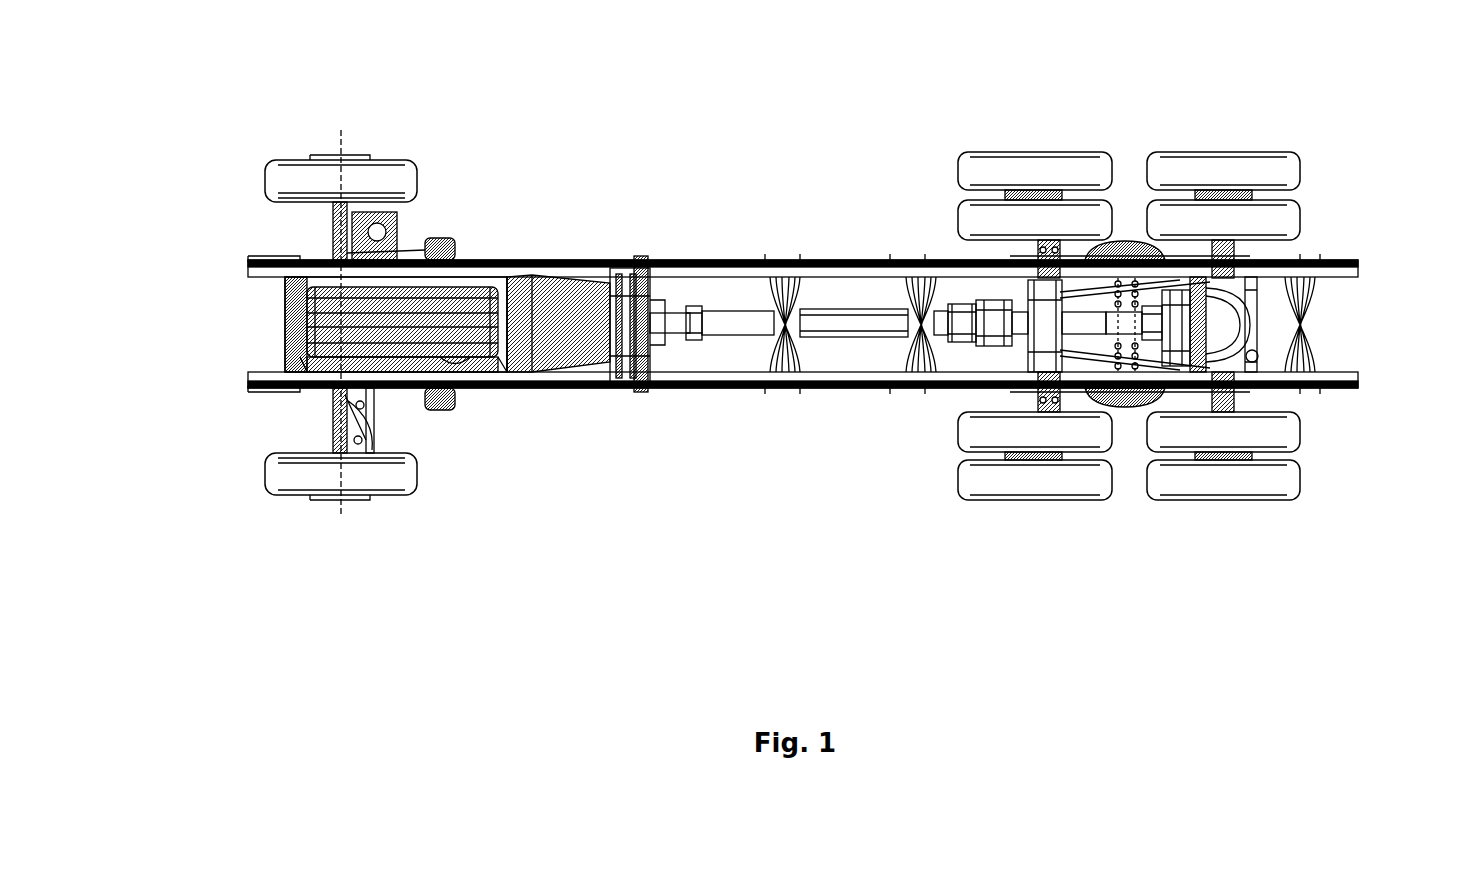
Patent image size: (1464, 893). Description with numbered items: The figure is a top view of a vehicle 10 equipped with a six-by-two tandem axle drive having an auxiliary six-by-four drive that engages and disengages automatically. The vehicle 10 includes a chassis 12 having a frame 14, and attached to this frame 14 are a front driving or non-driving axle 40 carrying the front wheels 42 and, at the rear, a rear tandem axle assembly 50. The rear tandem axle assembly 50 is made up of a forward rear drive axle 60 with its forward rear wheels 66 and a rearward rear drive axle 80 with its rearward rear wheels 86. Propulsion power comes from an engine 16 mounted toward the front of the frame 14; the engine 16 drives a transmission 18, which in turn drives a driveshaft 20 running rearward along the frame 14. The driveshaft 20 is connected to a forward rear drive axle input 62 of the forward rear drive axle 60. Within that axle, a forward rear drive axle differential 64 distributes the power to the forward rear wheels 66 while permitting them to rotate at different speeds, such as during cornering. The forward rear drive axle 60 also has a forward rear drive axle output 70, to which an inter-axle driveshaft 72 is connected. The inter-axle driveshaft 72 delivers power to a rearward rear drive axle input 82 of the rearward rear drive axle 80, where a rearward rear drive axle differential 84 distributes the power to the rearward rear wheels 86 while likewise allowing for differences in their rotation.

The vehicle 10 is at (505, 190).
The chassis 12 is at (590, 410).
The frame 14 is at (666, 388).
The engine 16 is at (345, 302).
The transmission 18 is at (557, 260).
The driveshaft 20 is at (835, 338).
The front axle 40 is at (330, 408).
The front wheels 42 is at (290, 160).
The rear tandem axle assembly 50 is at (1125, 148).
The forward rear drive axle 60 is at (1036, 502).
The forward rear drive axle input 62 is at (960, 345).
The forward rear drive axle differential 64 is at (1062, 285).
The forward rear wheels 66 is at (1000, 150).
The forward rear drive axle output 70 is at (1068, 392).
The inter-axle driveshaft 72 is at (1113, 392).
The rearward rear drive axle 80 is at (1223, 502).
The rearward rear drive axle input 82 is at (1173, 392).
The rearward rear drive axle differential 84 is at (1230, 345).
The rearward rear wheels 86 is at (1240, 150).